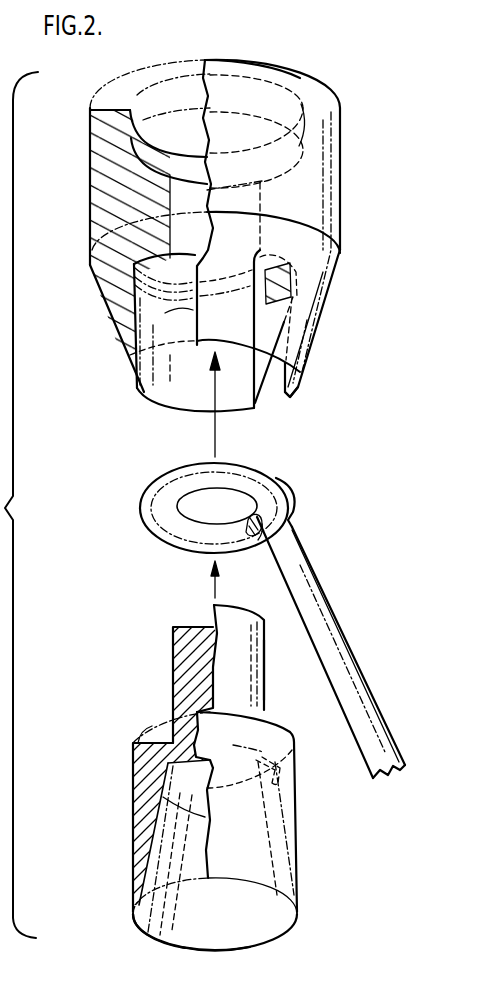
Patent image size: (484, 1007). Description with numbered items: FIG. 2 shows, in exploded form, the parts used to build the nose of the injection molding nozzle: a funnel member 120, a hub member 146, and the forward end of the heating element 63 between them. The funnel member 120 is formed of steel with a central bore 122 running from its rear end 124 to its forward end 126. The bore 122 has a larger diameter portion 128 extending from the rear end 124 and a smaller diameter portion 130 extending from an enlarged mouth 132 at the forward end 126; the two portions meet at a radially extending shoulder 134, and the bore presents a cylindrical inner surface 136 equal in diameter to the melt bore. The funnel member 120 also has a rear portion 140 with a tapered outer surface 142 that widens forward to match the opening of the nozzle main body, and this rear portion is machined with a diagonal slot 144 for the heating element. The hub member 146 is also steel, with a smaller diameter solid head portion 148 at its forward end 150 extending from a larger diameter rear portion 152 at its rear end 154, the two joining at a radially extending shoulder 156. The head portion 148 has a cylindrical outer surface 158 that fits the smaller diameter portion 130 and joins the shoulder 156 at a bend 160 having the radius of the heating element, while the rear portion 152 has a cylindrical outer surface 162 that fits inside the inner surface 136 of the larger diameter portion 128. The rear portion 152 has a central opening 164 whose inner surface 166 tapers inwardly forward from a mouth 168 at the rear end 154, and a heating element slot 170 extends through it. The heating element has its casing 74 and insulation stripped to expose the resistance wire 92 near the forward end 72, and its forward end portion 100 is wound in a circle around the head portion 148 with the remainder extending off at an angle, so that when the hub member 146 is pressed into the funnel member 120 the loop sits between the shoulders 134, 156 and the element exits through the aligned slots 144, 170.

The handle 63 is at (346, 630).
The forward end 72 is at (262, 548).
The casing 74 is at (393, 757).
The resistance wire 92 is at (251, 538).
The forward end portion 100 is at (290, 481).
The funnel member 120 is at (343, 185).
The central bore 122 is at (199, 321).
The rear end 124 is at (166, 400).
The forward end 126 is at (265, 70).
The larger diameter portion 128 is at (147, 394).
The smaller diameter portion 130 is at (253, 197).
The enlarged mouth 132 is at (302, 102).
The radially extending shoulder 134 is at (178, 266).
The cylindrical inner surface 136 is at (200, 400).
The rear portion 140 is at (333, 288).
The tapered outer surface 142 is at (322, 322).
The slot 144 is at (289, 400).
The hub member 146 is at (290, 747).
The head portion 148 is at (268, 690).
The forward end 150 is at (262, 606).
The rear portion 152 is at (270, 848).
The rear end 154 is at (300, 908).
The radially extending shoulder 156 is at (150, 730).
The cylindrical outer surface 158 is at (172, 662).
The bend 160 is at (134, 763).
The cylindrical outer surface 162 is at (133, 832).
The central opening 164 is at (224, 937).
The inner surface 166 is at (205, 822).
The mouth 168 is at (172, 930).
The heating element slot 170 is at (288, 808).